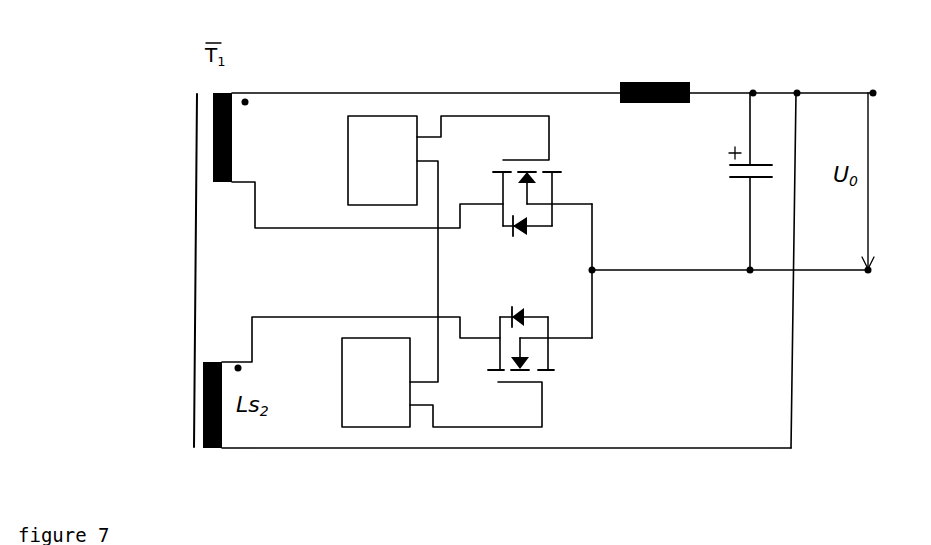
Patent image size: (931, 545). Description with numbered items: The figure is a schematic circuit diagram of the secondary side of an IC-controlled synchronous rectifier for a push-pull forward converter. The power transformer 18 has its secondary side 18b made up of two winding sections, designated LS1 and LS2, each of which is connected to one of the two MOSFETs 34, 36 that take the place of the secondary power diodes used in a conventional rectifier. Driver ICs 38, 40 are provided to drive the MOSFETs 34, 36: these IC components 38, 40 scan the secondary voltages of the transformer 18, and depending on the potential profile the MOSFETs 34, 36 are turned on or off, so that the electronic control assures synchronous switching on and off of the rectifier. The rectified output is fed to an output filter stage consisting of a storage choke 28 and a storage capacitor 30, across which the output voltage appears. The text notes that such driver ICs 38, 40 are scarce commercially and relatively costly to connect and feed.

The power transformer 18 is at (175, 70).
The secondary side 18b is at (237, 68).
The storage choke 28 is at (680, 77).
The storage capacitor 30 is at (762, 128).
The MOSFET 34 is at (605, 190).
The MOSFET 36 is at (593, 347).
The driver IC 38 is at (393, 135).
The driver IC 40 is at (377, 413).